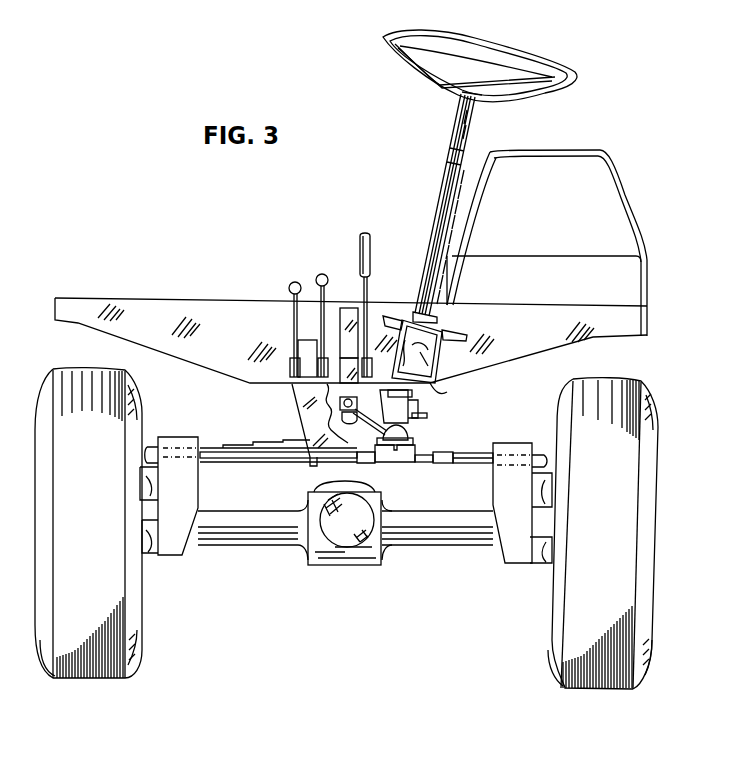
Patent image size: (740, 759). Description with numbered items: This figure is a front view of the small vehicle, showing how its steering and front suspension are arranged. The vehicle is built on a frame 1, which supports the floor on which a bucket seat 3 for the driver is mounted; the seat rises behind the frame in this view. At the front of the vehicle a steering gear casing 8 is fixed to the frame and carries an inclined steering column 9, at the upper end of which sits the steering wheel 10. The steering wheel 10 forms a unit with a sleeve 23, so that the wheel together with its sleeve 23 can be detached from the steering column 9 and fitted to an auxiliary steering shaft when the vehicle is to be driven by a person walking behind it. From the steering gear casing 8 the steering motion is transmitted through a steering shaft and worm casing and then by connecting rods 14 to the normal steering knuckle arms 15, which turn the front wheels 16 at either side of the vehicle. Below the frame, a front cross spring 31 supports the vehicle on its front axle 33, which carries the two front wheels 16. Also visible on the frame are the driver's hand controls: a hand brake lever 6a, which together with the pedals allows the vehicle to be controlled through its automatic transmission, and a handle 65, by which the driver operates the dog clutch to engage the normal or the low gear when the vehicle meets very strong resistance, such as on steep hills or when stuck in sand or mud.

The frame 1 is at (113, 306).
The bucket seat 3 is at (628, 248).
The hand brake lever 6a is at (368, 255).
The steering gear casing 8 is at (432, 389).
The steering column 9 is at (448, 206).
The steering wheel 10 is at (531, 54).
The connecting rods 14 is at (445, 452).
The steering knuckle arms 15 is at (153, 470).
The front wheels 16 is at (105, 595).
The sleeve 23 is at (458, 133).
The front cross spring 31 is at (250, 453).
The front axle 33 is at (252, 527).
The handle 65 is at (322, 277).